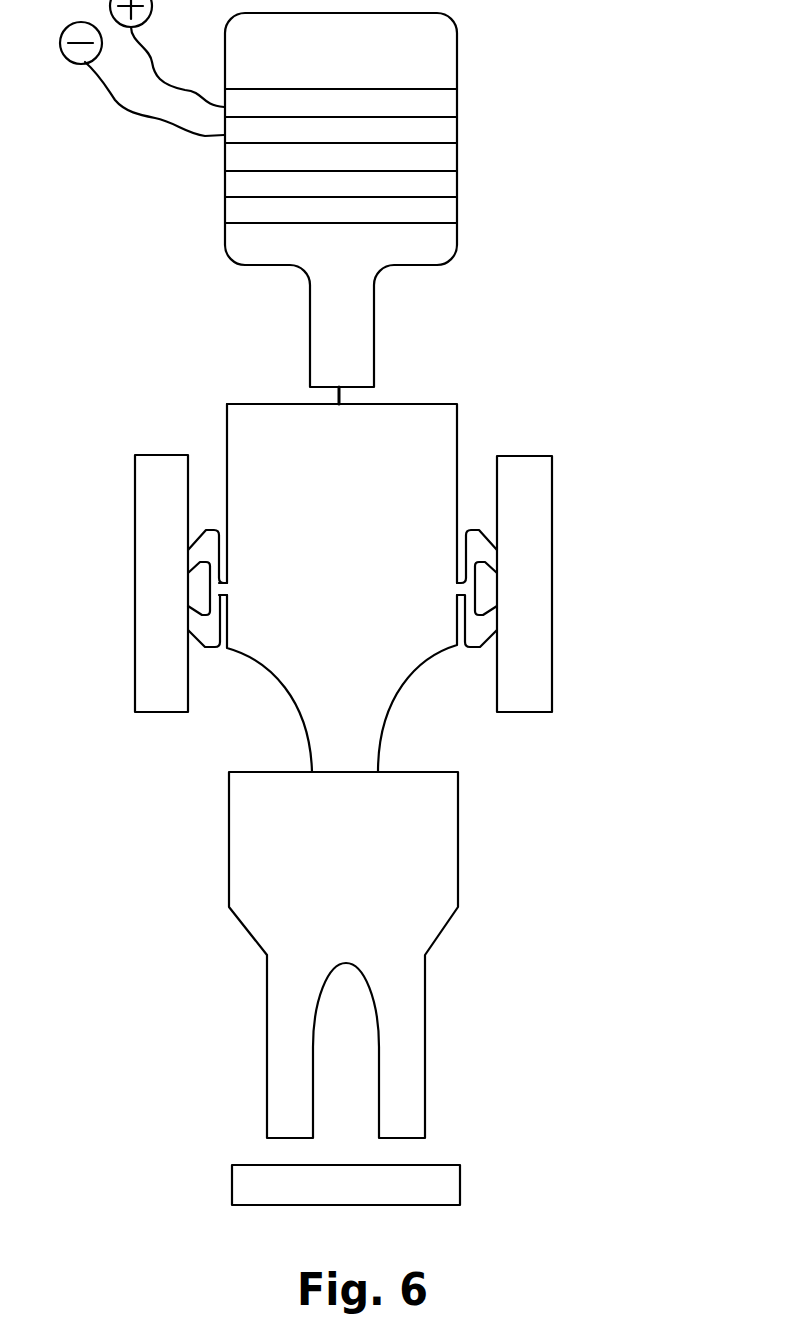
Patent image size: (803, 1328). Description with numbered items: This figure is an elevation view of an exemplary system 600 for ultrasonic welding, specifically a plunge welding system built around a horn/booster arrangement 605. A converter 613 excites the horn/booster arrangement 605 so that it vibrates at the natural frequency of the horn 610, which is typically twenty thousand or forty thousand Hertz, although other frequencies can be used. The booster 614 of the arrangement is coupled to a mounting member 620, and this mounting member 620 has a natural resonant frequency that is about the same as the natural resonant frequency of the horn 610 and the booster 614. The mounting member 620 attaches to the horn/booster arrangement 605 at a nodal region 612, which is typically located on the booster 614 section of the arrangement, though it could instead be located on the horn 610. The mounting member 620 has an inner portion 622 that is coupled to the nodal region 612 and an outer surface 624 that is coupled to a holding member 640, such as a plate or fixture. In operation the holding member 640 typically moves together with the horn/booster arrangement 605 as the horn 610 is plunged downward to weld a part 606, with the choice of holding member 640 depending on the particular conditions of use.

The system 600 is at (512, 328).
The horn/booster arrangement 605 is at (422, 403).
The part 606 is at (460, 1183).
The horn 610 is at (460, 857).
The nodal region 612 is at (228, 590).
The converter 613 is at (450, 133).
The booster 614 is at (427, 447).
The mounting member 620 is at (487, 555).
The inner portion 622 is at (223, 590).
The outer surface 624 is at (187, 617).
The holding member 640 is at (530, 703).